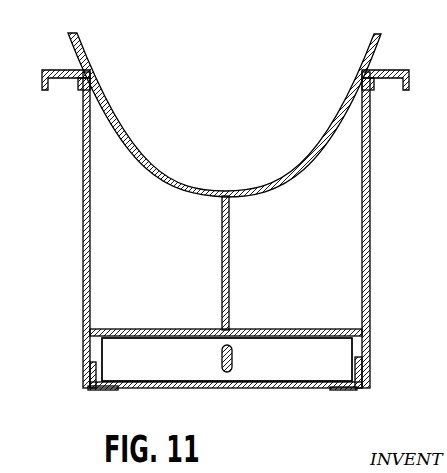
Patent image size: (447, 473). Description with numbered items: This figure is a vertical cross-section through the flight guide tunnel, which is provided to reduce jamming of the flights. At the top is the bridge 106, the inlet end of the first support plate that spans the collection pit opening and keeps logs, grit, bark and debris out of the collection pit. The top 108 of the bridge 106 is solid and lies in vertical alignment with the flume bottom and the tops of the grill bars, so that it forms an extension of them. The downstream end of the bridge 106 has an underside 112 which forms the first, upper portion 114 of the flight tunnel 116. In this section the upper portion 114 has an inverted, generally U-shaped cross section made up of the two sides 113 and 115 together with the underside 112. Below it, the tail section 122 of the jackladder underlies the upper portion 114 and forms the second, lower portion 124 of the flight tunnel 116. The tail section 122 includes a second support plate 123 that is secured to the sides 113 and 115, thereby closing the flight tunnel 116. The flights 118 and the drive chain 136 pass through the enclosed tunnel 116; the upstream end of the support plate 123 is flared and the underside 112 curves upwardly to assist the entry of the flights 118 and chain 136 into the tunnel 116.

The bridge 106 is at (257, 158).
The top of the bridge 108 is at (163, 175).
The underside 112 is at (172, 328).
The side 113 is at (83, 315).
The upper portion of flight tunnel 114 is at (316, 338).
The side 115 is at (370, 310).
The flight tunnel 116 is at (358, 350).
The flights 118 is at (253, 357).
The tail section 122 is at (133, 393).
The second support plate 123 is at (188, 387).
The lower portion of flight tunnel 124 is at (305, 387).
The drive chain 136 is at (232, 361).